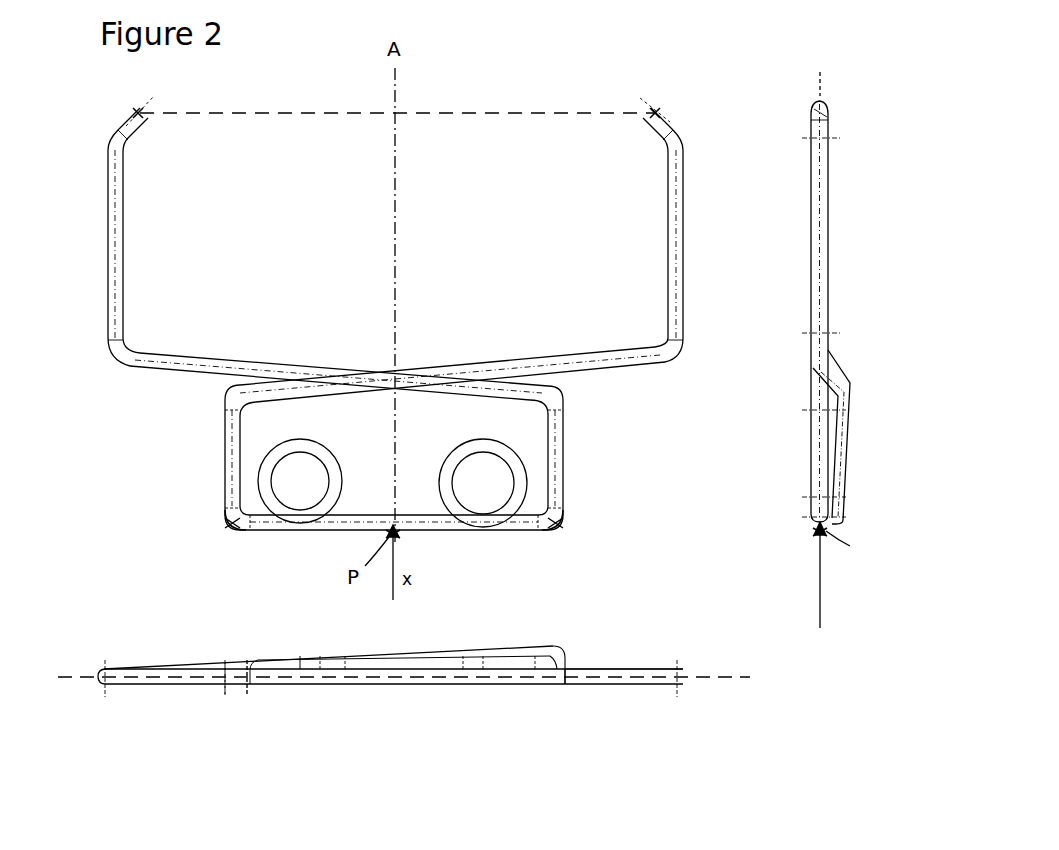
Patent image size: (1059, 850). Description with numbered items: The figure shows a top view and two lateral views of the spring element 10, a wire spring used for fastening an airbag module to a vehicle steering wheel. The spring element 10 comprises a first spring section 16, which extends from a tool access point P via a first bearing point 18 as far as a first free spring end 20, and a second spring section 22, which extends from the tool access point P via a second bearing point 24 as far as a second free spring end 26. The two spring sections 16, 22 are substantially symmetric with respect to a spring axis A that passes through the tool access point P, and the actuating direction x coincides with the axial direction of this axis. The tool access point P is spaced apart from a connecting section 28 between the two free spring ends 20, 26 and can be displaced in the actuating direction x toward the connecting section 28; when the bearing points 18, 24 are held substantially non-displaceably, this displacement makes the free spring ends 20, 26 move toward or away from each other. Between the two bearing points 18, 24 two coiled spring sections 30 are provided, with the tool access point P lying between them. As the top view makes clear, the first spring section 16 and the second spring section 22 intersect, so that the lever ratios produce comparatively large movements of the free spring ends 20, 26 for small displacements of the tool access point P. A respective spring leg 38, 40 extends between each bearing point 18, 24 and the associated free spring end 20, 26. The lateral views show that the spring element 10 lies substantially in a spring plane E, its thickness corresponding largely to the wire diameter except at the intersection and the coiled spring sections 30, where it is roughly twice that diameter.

The spring element 10 is at (689, 92).
The first spring section 16 is at (191, 383).
The first bearing point 18 is at (553, 518).
The first free spring end 20 is at (142, 120).
The second spring section 22 is at (611, 384).
The second bearing point 24 is at (236, 518).
The second free spring end 26 is at (652, 122).
The connecting section 28 is at (485, 112).
The coiled spring section 30 is at (262, 480).
The spring leg 38 is at (190, 365).
The spring leg 40 is at (620, 358).